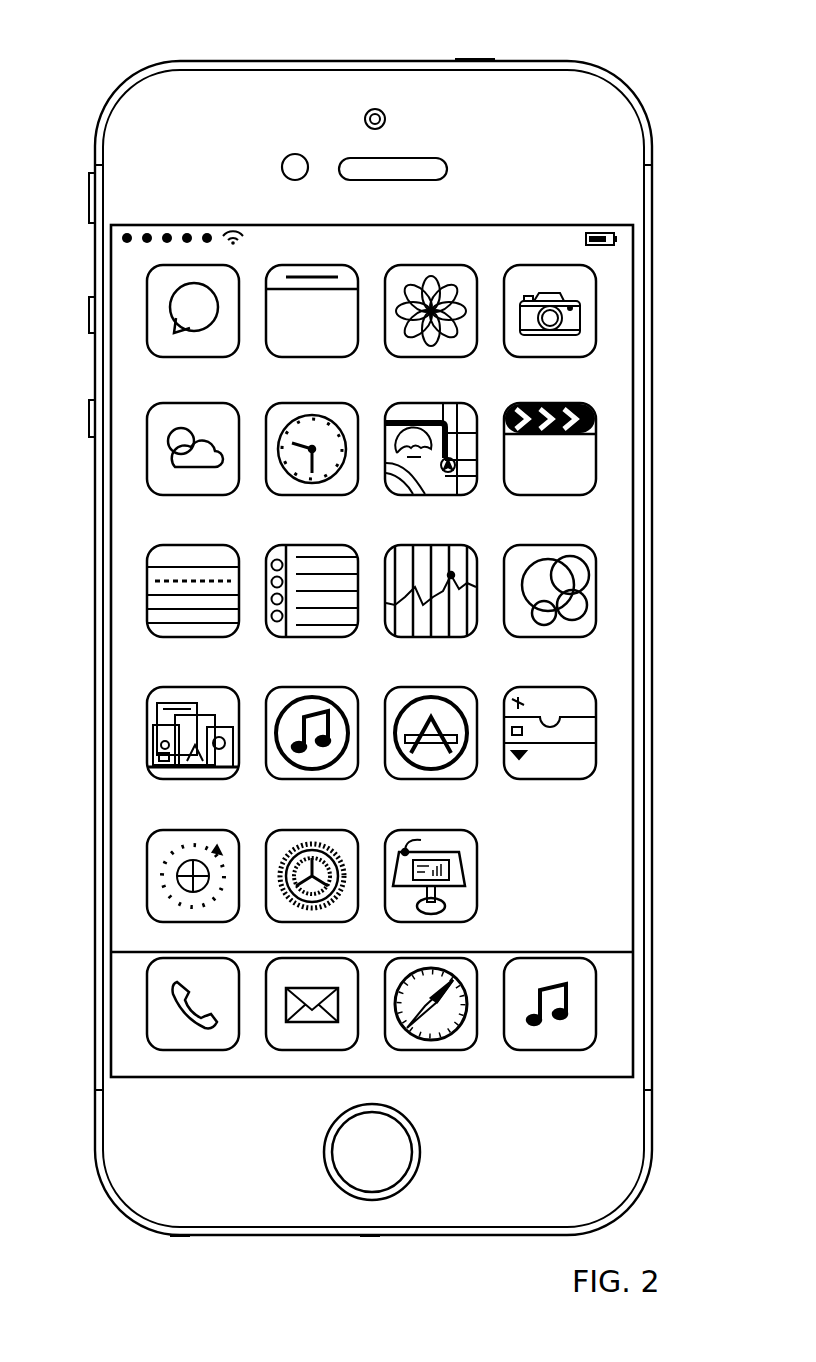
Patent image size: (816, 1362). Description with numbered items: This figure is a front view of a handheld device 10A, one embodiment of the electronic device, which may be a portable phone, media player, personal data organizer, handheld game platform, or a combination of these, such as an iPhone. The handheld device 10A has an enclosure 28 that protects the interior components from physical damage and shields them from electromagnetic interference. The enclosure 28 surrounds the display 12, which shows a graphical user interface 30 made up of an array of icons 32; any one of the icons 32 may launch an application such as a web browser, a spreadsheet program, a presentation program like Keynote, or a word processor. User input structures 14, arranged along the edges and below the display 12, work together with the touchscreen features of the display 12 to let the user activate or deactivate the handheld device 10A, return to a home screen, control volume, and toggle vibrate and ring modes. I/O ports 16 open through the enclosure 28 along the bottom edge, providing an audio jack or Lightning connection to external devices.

The handheld device 10A is at (100, 43).
The display 12 is at (638, 568).
The user input structures 14 is at (522, 60).
The I/O ports 16 is at (180, 1237).
The enclosure 28 is at (654, 178).
The graphical user interface 30 is at (613, 375).
The icons 32 is at (478, 878).